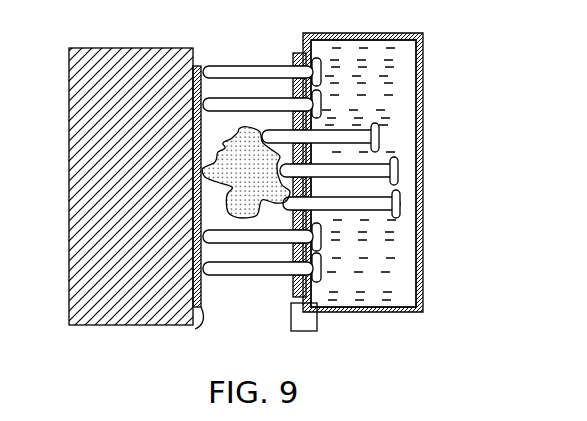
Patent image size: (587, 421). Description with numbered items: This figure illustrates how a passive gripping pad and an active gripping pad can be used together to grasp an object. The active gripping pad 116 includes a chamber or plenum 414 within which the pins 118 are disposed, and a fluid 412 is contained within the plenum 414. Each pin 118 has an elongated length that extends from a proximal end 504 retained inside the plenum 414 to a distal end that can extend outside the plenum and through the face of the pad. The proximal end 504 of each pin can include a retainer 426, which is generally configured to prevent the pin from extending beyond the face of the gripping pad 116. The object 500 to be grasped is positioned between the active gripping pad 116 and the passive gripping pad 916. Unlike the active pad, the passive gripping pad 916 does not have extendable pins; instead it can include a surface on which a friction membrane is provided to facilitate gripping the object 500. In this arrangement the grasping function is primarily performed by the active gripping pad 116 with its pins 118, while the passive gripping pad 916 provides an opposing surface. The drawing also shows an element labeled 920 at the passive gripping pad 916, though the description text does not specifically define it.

The passive gripping pad 916 is at (69, 272).
The thermal interface layer 920 is at (195, 329).
The pins 118 is at (250, 98).
The retainer 426 is at (322, 80).
The plenum 414 is at (403, 48).
The gripping pad 116 is at (423, 254).
The fluid 412 is at (363, 173).
The proximal end 504 is at (378, 133).
The object 500 is at (246, 172).